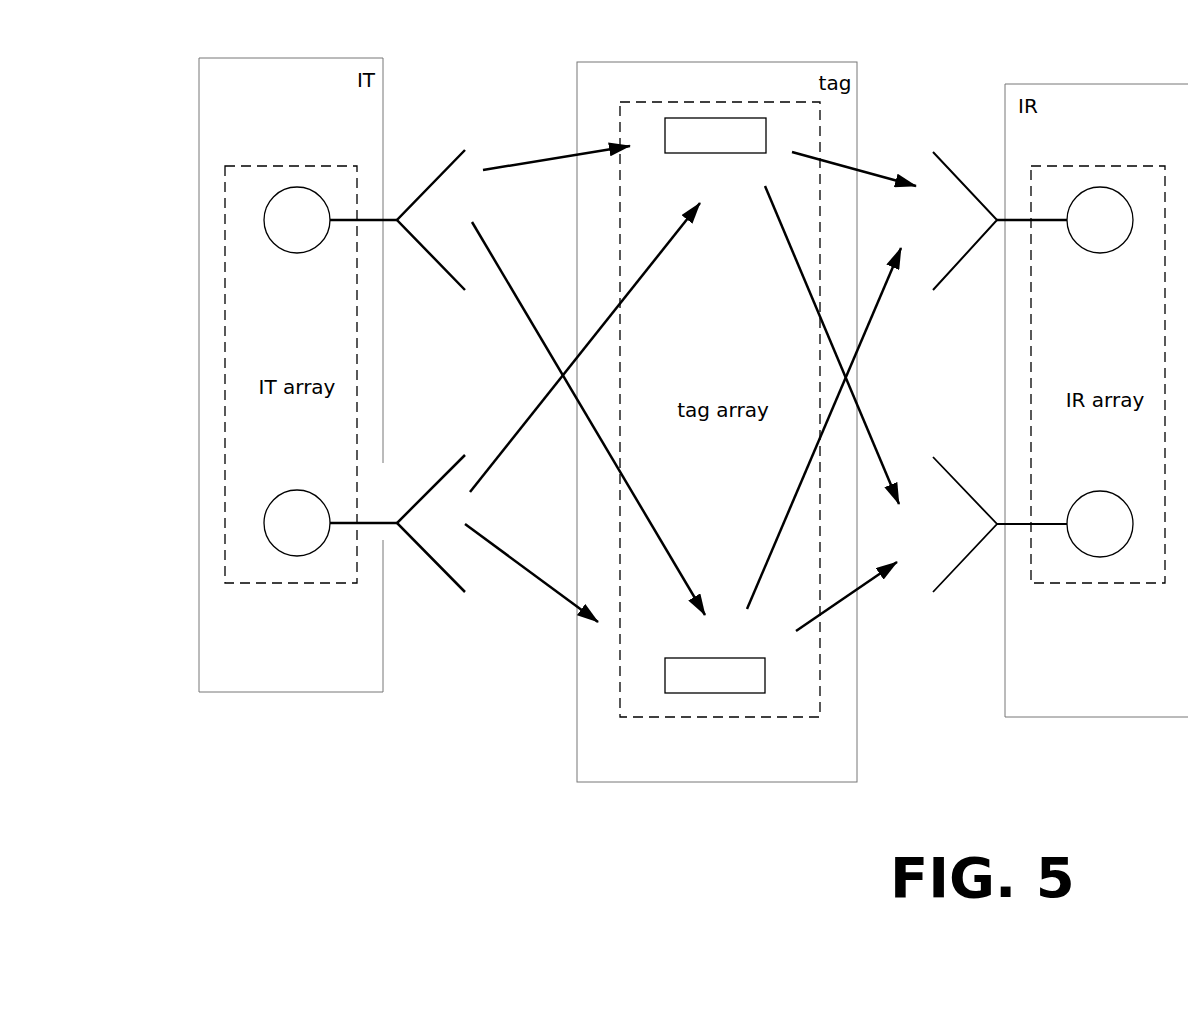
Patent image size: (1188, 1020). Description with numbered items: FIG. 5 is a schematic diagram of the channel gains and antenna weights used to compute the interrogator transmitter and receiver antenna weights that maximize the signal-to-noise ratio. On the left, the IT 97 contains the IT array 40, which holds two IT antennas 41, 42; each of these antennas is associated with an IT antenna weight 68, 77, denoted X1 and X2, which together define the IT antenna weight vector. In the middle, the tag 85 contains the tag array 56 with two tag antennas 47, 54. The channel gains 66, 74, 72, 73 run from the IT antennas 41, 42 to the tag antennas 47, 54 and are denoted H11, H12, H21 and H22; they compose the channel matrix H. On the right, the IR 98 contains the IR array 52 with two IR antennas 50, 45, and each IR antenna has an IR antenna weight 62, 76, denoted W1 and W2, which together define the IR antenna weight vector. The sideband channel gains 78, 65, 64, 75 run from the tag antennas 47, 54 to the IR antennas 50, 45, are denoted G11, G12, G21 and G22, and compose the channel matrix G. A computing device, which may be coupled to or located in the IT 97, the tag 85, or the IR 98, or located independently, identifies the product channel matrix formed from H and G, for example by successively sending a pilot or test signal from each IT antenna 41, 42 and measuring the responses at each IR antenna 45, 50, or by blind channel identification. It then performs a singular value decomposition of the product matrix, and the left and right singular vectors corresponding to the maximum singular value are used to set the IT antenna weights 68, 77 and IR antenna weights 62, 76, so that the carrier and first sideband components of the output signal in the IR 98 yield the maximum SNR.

The IT array 40 is at (231, 198).
The IT antenna 41 is at (375, 190).
The IT antenna 42 is at (400, 545).
The IR antenna 45 is at (968, 580).
The tag antenna 47 is at (703, 148).
The IR antenna 50 is at (988, 178).
The IR array 52 is at (1136, 578).
The tag antenna 54 is at (703, 688).
The tag array 56 is at (788, 703).
The IR antenna weight 62 is at (1088, 231).
The sideband channel gain 64 is at (902, 322).
The sideband channel gain 65 is at (881, 423).
The channel gain 66 is at (556, 133).
The IT antenna weight 68 is at (285, 231).
The channel gain 72 is at (510, 417).
The channel gain 73 is at (527, 602).
The channel gain 74 is at (594, 452).
The sideband channel gain 75 is at (861, 614).
The IR antenna weight 76 is at (1088, 535).
The IT antenna weight 77 is at (285, 534).
The sideband channel gain 78 is at (879, 163).
The tag 85 is at (814, 773).
The IT 97 is at (343, 680).
The IR 98 is at (1151, 708).